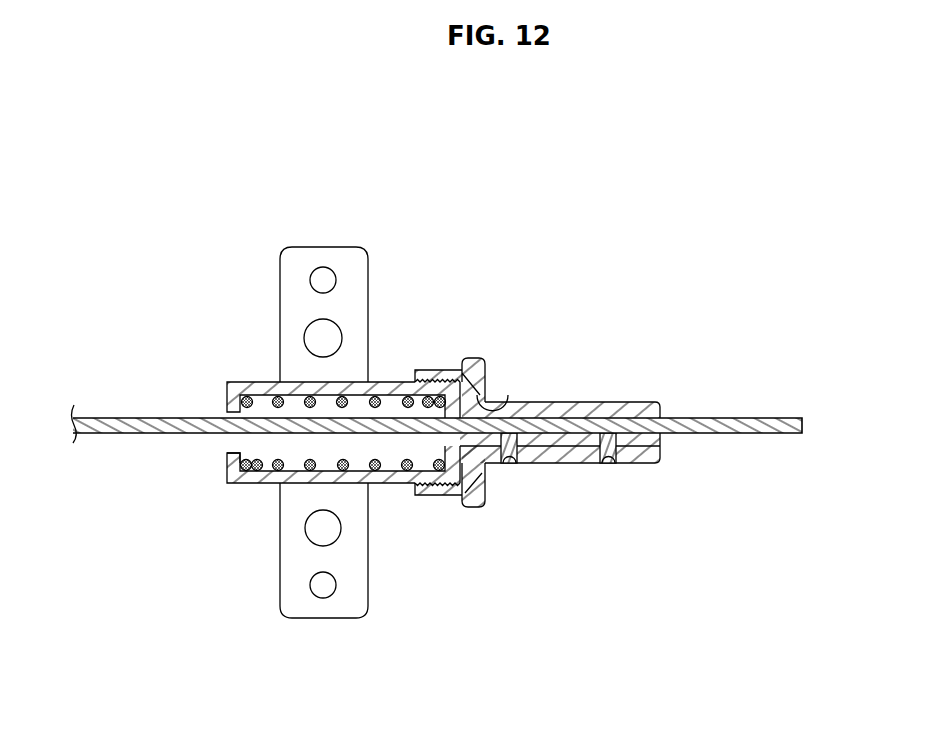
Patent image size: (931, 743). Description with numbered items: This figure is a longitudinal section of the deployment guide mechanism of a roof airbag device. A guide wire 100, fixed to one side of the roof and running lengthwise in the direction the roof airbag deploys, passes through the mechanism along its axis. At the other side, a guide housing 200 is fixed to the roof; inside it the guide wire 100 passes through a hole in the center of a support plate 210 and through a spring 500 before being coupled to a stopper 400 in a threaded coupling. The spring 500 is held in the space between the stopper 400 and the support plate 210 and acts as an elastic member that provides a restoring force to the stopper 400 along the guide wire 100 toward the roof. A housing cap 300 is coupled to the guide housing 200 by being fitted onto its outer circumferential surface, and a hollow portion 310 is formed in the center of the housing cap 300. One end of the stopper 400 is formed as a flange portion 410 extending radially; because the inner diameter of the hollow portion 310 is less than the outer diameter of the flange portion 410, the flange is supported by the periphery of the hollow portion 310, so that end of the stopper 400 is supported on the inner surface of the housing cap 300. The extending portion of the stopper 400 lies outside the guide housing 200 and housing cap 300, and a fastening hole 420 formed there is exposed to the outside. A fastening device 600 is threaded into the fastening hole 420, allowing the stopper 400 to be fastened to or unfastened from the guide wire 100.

The guide wire 100 is at (737, 427).
The guide housing 200 is at (255, 388).
The support plate 210 is at (233, 463).
The housing cap 300 is at (474, 370).
The hollow portion 310 is at (507, 402).
The stopper 400 is at (607, 402).
The flange portion 410 is at (422, 370).
The fastening hole 420 is at (510, 464).
The spring 500 is at (375, 463).
The fastening device 600 is at (515, 464).